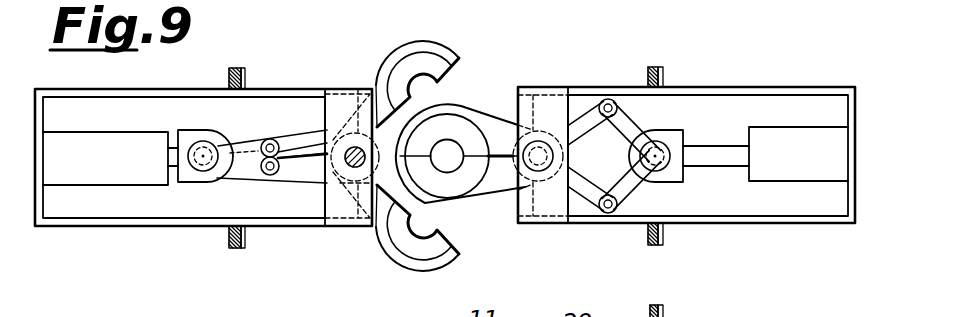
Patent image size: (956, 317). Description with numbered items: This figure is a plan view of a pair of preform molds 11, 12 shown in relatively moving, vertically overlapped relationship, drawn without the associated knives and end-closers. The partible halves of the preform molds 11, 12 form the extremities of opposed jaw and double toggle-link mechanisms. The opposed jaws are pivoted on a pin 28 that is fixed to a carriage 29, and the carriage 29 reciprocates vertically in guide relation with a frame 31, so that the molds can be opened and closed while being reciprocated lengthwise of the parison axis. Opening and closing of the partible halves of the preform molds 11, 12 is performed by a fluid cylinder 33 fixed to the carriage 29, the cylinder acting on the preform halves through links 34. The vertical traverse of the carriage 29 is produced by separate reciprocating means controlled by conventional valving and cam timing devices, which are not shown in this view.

The preform mold 11 is at (470, 98).
The preform mold 12 is at (428, 37).
The pin 28 is at (348, 158).
The carriage 29 is at (165, 233).
The frame 31 is at (245, 72).
The fluid cylinder 33 is at (100, 186).
The links 34 is at (243, 176).